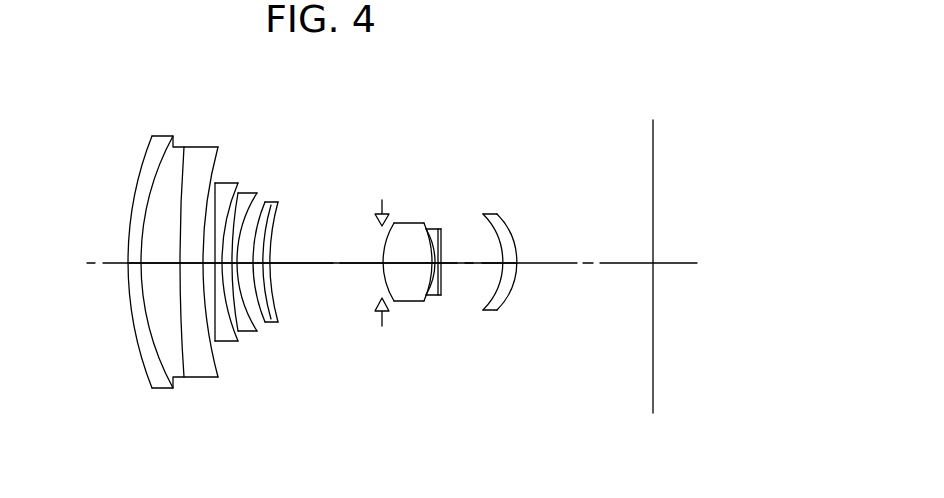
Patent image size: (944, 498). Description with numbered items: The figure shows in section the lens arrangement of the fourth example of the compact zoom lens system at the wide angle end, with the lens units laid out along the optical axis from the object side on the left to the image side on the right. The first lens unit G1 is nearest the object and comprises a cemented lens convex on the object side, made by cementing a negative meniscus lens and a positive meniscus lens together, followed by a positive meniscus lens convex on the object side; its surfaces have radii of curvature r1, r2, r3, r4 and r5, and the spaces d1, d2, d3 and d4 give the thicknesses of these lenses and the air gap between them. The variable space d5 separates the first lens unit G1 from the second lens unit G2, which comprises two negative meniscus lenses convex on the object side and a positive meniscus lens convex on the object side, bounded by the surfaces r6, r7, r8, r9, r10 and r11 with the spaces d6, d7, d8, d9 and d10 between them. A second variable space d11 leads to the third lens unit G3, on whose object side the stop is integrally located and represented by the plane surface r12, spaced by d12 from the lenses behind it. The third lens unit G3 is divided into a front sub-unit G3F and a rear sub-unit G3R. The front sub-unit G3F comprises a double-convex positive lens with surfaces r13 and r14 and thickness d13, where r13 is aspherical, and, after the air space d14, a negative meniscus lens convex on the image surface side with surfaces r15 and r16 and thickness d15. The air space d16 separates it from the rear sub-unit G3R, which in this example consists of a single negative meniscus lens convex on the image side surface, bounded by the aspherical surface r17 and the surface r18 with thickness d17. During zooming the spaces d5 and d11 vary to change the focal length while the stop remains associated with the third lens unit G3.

The first lens unit G1 is at (213, 105).
The second lens unit G2 is at (288, 105).
The third lens unit G3 is at (508, 75).
The front sub-unit of the third lens unit G3F is at (447, 108).
The rear sub-unit of the third lens unit G3R is at (508, 108).
The radius of curvature of the first lens surface r1 is at (140, 172).
The radius of curvature of the second lens surface r2 is at (170, 150).
The radius of curvature of the third lens surface r3 is at (186, 156).
The radius of curvature of the fourth lens surface r4 is at (207, 180).
The radius of curvature of the fifth lens surface r5 is at (211, 180).
The radius of curvature of the sixth lens surface r6 is at (240, 190).
The radius of curvature of the seventh lens surface r7 is at (240, 192).
The radius of curvature of the eighth lens surface r8 is at (253, 197).
The radius of curvature of the ninth lens surface r9 is at (263, 200).
The radius of curvature of the tenth lens surface r10 is at (271, 204).
The radius of curvature of the eleventh lens surface r11 is at (279, 211).
The stop surface r12 is at (378, 205).
The radius of curvature of the thirteenth lens surface r13 is at (393, 222).
The radius of curvature of the fourteenth lens surface r14 is at (426, 228).
The radius of curvature of the fifteenth lens surface r15 is at (438, 228).
The radius of curvature of the sixteenth lens surface r16 is at (441, 228).
The radius of curvature of the seventeenth lens surface r17 is at (483, 213).
The radius of curvature of the eighteenth lens surface r18 is at (499, 215).
The space between the first and second lens surfaces d1 is at (131, 276).
The space between the second and third lens surfaces d2 is at (160, 278).
The space between the third and fourth lens surfaces d3 is at (179, 297).
The space between the fourth and fifth lens surfaces d4 is at (195, 300).
The space between the fifth and sixth lens surfaces d5 is at (203, 325).
The space between the sixth and seventh lens surfaces d6 is at (227, 325).
The space between the seventh and eighth lens surfaces d7 is at (247, 330).
The space between the eighth and ninth lens surfaces d8 is at (255, 315).
The space between the ninth and tenth lens surfaces d9 is at (276, 322).
The space between the tenth and eleventh lens surfaces d10 is at (271, 285).
The space between the eleventh and twelfth lens surfaces d11 is at (326, 278).
The space between the twelfth and thirteenth lens surfaces d12 is at (396, 303).
The space between the thirteenth and fourteenth lens surfaces d13 is at (416, 279).
The space between the fourteenth and fifteenth lens surfaces d14 is at (427, 299).
The space between the fifteenth and sixteenth lens surfaces d15 is at (440, 297).
The space between the sixteenth and seventeenth lens surfaces d16 is at (472, 279).
The space between the seventeenth and eighteenth lens surfaces d17 is at (508, 281).